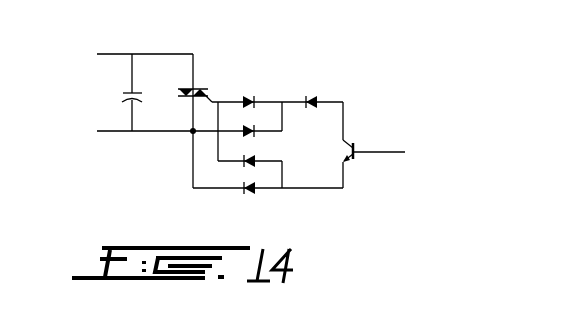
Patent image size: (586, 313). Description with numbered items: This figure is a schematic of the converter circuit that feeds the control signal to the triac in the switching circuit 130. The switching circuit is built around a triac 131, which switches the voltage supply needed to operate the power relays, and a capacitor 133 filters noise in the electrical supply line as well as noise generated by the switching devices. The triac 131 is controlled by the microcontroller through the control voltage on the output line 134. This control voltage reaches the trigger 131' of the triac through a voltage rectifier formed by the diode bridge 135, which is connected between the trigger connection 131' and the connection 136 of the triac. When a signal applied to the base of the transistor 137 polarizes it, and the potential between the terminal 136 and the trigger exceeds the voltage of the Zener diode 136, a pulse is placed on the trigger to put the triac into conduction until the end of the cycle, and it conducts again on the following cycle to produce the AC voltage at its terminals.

The switching circuit 130 is at (281, 55).
The triac 131 is at (176, 63).
The trigger 131' is at (223, 78).
The capacitor 133 is at (125, 109).
The output line 134 is at (398, 151).
The diode bridge 135 is at (238, 146).
The connection of the triac 136 is at (190, 137).
The transistor 137 is at (355, 160).